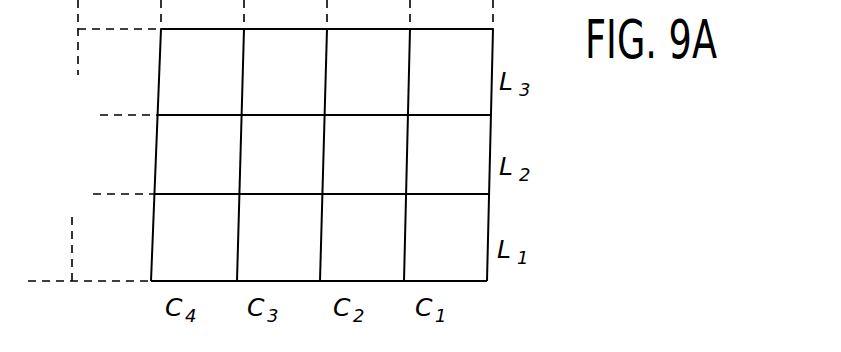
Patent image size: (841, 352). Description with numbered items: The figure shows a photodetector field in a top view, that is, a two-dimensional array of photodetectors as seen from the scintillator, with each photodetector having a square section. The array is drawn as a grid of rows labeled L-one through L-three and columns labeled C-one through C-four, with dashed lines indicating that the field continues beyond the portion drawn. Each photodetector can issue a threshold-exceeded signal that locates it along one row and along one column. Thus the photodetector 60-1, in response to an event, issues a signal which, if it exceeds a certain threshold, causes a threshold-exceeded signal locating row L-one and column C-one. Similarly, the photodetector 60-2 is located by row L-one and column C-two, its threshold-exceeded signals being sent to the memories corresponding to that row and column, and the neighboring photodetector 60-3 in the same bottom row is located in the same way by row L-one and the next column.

The photodetector 60-1 is at (450, 253).
The photodetector 60-2 is at (363, 252).
The photodetector 60-3 is at (276, 250).